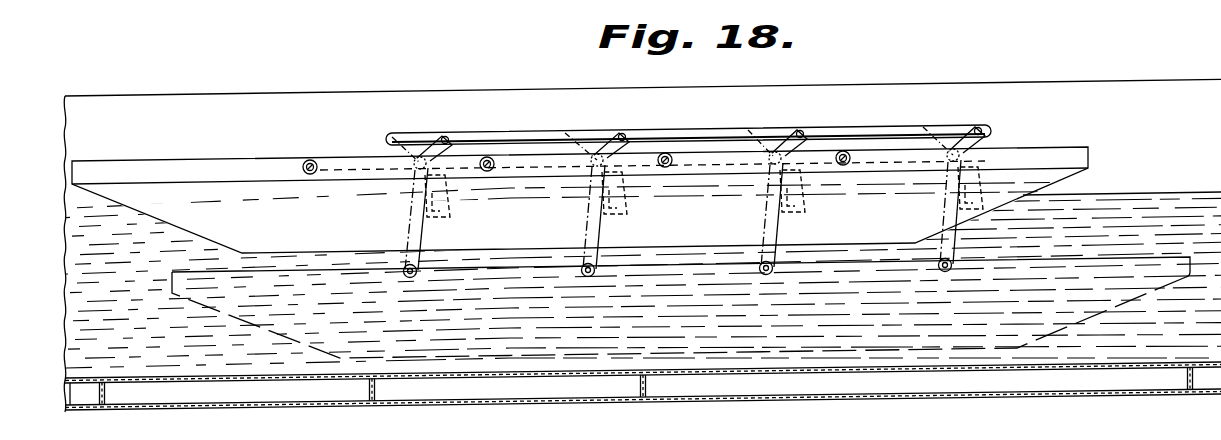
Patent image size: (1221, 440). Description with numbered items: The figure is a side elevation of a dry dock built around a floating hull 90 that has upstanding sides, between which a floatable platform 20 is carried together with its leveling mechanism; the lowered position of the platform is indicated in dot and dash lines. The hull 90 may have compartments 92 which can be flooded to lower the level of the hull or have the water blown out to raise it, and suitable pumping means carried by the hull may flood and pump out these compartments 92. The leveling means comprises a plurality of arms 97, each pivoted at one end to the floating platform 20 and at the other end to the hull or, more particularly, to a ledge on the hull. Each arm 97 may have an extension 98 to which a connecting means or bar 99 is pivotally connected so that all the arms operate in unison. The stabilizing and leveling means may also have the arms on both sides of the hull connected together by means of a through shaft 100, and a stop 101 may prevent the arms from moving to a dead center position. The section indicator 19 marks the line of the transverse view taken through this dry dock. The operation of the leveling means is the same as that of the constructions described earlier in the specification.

The section line 19- 19 is at (85, 439).
The floatable platform 20 is at (171, 161).
The floating hull 90 is at (762, 402).
The compartments 92 is at (571, 391).
The arms 97 is at (337, 172).
The extension 98 is at (402, 150).
The connecting means or bar 99 is at (556, 138).
The through shaft 100 is at (667, 154).
The stop 101 is at (432, 196).